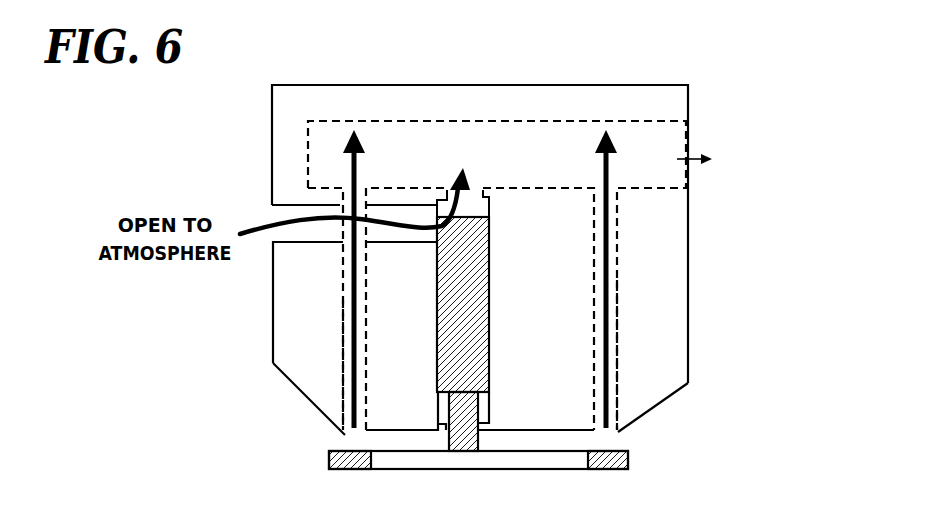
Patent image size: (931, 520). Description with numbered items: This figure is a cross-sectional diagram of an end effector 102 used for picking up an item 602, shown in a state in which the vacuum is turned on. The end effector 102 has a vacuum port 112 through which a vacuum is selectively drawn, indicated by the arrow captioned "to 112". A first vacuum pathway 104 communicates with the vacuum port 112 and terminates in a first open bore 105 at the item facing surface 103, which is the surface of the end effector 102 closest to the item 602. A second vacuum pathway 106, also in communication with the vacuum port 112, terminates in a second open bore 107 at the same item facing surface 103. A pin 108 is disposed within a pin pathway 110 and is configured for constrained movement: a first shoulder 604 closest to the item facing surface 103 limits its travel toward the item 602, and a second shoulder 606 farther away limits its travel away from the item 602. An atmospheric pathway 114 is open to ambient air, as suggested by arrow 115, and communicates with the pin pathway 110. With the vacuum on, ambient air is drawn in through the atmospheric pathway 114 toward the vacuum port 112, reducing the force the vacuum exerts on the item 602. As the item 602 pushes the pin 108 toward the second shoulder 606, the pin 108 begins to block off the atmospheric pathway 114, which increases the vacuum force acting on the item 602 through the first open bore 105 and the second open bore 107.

The end effector 102 is at (688, 268).
The item facing surface 103 is at (570, 428).
The first vacuum pathway 104 is at (343, 337).
The first open bore 105 is at (351, 436).
The second vacuum pathway 106 is at (618, 308).
The second open bore 107 is at (603, 434).
The pin 108 is at (480, 407).
The pin pathway 110 is at (438, 410).
The vacuum port 112 is at (729, 160).
The atmospheric pathway 114 is at (300, 242).
The arrow 115 is at (272, 228).
The item 602 is at (560, 469).
The first shoulder 604 is at (438, 432).
The second shoulder 606 is at (489, 198).